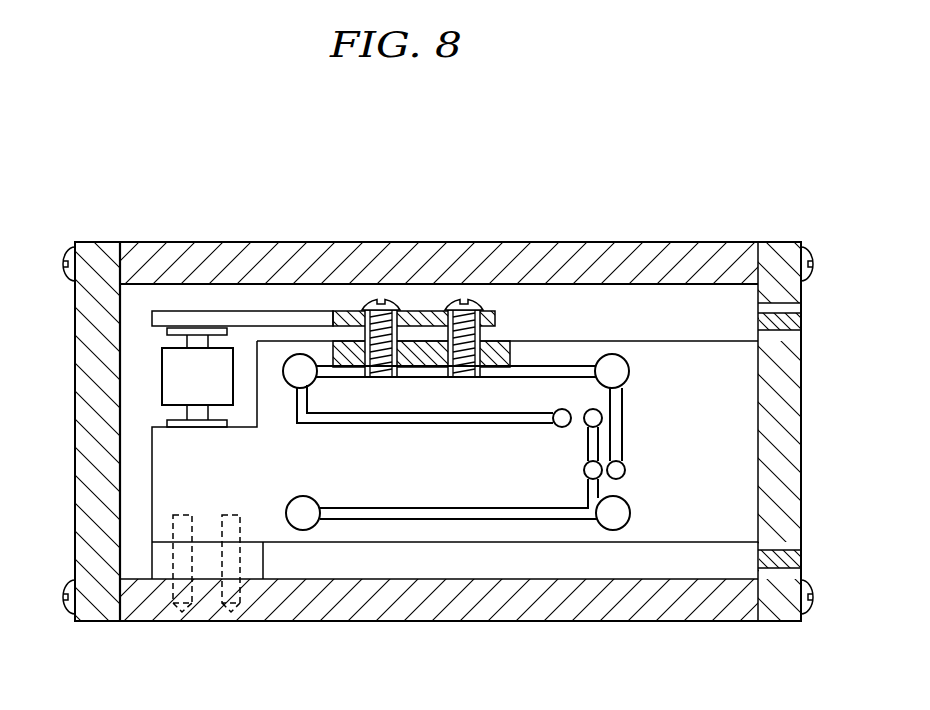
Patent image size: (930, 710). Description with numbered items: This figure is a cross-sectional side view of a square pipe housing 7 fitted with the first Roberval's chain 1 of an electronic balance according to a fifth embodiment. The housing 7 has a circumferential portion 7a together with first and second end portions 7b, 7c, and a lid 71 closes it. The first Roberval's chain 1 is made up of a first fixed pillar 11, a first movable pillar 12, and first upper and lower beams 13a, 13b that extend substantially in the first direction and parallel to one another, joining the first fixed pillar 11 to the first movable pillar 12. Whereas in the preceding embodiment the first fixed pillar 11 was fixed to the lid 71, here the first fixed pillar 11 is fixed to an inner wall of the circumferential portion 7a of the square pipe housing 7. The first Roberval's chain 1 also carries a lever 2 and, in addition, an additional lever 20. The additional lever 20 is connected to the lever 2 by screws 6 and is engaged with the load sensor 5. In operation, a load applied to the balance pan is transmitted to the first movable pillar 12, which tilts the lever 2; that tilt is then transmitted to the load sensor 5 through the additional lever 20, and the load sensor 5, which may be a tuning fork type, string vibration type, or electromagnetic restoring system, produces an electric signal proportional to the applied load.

The first Roberval's chain 1 is at (648, 315).
The lever 2 is at (498, 393).
The load sensor 5 is at (172, 377).
The screw 6 is at (381, 298).
The housing 7 is at (636, 242).
The circumferential portion 7a is at (340, 608).
The first end portion 7b is at (122, 600).
The second end portion 7c is at (757, 602).
The first fixed pillar 11 is at (167, 480).
The first movable pillar 12 is at (680, 525).
The first upper beam 13a is at (548, 352).
The first lower beam 13b is at (418, 532).
The additional lever 20 is at (288, 316).
The lid 71 is at (88, 292).